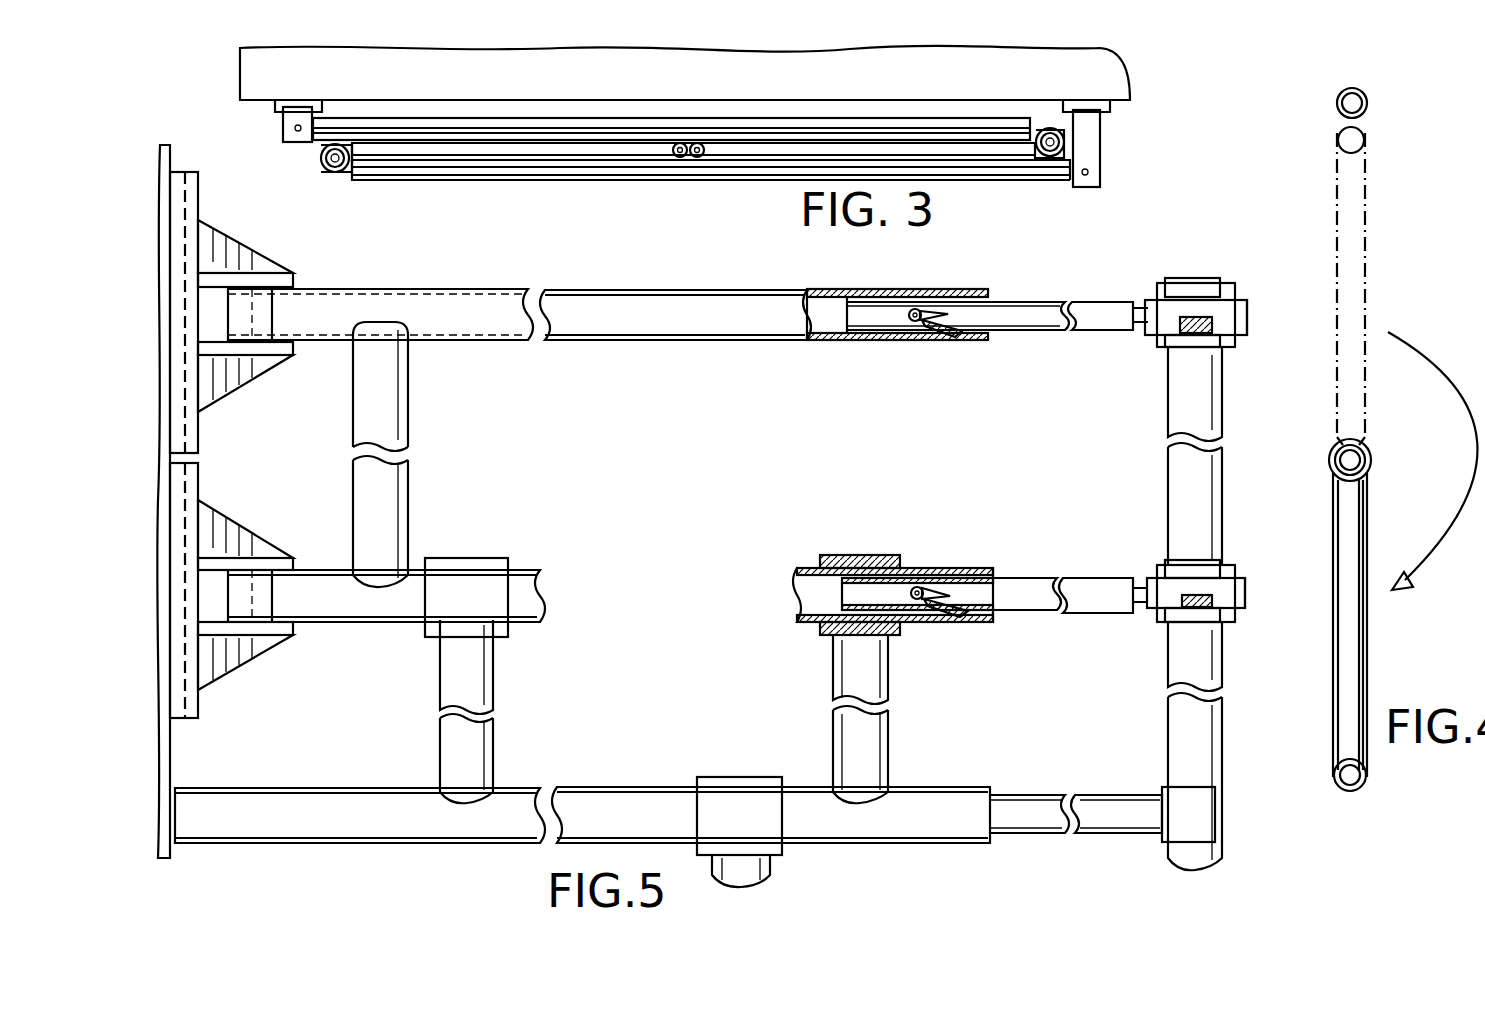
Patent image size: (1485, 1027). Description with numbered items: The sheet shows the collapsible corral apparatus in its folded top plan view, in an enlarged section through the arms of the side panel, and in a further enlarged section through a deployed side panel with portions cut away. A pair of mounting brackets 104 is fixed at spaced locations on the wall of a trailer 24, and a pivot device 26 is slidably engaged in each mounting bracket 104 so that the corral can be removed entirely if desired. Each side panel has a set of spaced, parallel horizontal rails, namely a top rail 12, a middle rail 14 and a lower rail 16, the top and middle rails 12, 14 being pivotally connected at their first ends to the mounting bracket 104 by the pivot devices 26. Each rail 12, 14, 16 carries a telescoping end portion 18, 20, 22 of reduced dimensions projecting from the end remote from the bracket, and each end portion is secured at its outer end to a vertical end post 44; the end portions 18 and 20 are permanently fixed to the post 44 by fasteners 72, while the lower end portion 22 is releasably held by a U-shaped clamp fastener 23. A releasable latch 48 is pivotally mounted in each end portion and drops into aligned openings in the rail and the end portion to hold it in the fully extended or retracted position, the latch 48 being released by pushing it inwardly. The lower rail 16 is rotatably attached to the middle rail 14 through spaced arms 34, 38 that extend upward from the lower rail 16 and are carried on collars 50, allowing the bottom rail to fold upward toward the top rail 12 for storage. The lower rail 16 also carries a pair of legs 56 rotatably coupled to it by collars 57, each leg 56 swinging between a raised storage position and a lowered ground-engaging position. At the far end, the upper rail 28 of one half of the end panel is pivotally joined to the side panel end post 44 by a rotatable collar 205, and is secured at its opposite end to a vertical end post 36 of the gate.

In FIG. 3, the top rail 12 is at (847, 130).
In FIG. 4, the top rail 12 is at (1368, 93).
In FIG. 5, the top rail 12 is at (660, 297).
In FIG. 4, the middle rail 14 is at (1372, 457).
In FIG. 5, the middle rail 14 is at (668, 578).
In FIG. 4, the lower rail 16 is at (1342, 760).
In FIG. 5, the lower rail 16 is at (645, 790).
In FIG. 5, the telescoping end portion 18 is at (1092, 302).
In FIG. 5, the telescoping end portion 20 is at (1108, 578).
In FIG. 5, the telescoping end portion 22 is at (1095, 803).
In FIG. 5, the releasable clamp fastener 23 is at (1180, 803).
In FIG. 3, the wall of a trailer 24 is at (248, 66).
In FIG. 5, the wall of a trailer 24 is at (165, 758).
In FIG. 3, the pivot device 26 is at (284, 130).
In FIG. 5, the pivot device 26 is at (228, 350).
In FIG. 3, the upper rail of end panel 28 is at (565, 142).
In FIG. 4, the arm 34 is at (1365, 213).
In FIG. 5, the arm 34 is at (490, 682).
In FIG. 3, the end post 36 is at (697, 143).
In FIG. 5, the arm 38 is at (890, 677).
In FIG. 3, the vertical end post 44 is at (323, 165).
In FIG. 5, the vertical end post 44 is at (1177, 405).
In FIG. 5, the releasable latch 48 is at (947, 336).
In FIG. 4, the collar 50 is at (1343, 440).
In FIG. 5, the collar 50 is at (462, 575).
In FIG. 5, the leg 56 is at (747, 863).
In FIG. 5, the collar 57 is at (743, 782).
In FIG. 3, the fastener 72 is at (332, 172).
In FIG. 5, the fastener 72 is at (1247, 297).
In FIG. 3, the mounting bracket 104 is at (276, 106).
In FIG. 5, the mounting bracket 104 is at (198, 427).
In FIG. 5, the rotatable collar 205 is at (1233, 322).